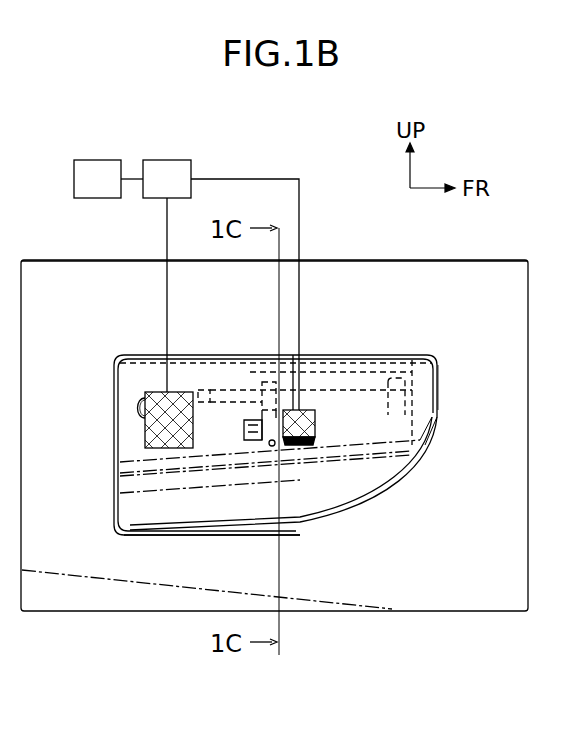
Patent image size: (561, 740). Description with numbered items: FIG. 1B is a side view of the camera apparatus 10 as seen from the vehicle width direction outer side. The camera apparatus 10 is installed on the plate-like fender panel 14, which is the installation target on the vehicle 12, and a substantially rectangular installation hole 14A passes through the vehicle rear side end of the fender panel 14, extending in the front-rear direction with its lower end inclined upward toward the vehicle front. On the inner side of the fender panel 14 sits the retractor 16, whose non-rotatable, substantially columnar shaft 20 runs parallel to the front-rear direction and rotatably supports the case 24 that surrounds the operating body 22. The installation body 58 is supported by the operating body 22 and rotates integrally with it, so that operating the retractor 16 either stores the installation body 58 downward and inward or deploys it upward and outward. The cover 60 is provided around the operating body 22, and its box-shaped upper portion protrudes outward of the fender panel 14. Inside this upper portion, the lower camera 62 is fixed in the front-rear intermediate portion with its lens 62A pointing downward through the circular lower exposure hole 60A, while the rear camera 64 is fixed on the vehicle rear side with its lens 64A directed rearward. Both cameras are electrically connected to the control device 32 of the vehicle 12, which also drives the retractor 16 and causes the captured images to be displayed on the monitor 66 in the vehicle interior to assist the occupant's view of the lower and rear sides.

The camera apparatus 10 is at (445, 328).
The vehicle 12 is at (55, 275).
The fender panel 14 is at (357, 270).
The installation hole 14A is at (180, 528).
The retractor 16 is at (279, 391).
The shaft 20 is at (225, 388).
The operating body 22 is at (410, 360).
The case 24 is at (252, 380).
The control device 32 is at (167, 160).
The installation body 58 is at (139, 350).
The cover 60 is at (338, 512).
The lower exposure hole 60A is at (298, 447).
The lower camera 62 is at (320, 410).
The lens 62A is at (283, 446).
The rear camera 64 is at (163, 450).
The lens 64A is at (138, 408).
The monitor 66 is at (93, 160).